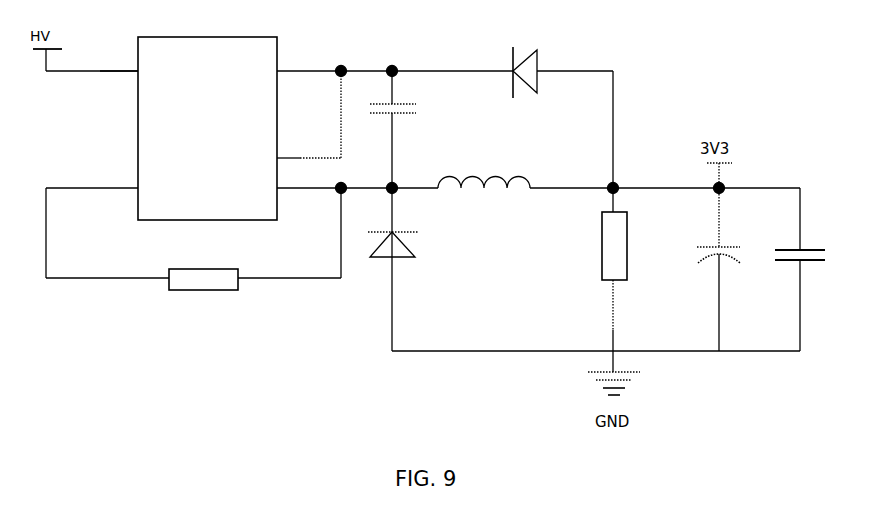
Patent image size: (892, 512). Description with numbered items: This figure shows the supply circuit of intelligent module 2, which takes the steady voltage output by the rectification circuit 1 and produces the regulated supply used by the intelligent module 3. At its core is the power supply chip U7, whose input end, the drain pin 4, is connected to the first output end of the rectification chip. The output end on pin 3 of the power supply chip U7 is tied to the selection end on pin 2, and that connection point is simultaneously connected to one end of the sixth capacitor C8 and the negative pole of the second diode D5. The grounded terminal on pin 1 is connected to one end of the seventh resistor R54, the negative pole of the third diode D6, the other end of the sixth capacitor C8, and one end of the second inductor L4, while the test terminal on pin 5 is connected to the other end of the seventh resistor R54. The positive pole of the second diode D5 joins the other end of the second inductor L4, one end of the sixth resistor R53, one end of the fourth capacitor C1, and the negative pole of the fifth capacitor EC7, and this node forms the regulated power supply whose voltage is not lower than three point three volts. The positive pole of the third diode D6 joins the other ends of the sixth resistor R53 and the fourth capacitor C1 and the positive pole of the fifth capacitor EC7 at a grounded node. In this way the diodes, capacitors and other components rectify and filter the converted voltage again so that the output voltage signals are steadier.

The power supply chip U7 is at (207, 114).
The seventh resistor R54 is at (203, 268).
The sixth resistor R53 is at (592, 280).
The sixth capacitor C8 is at (407, 129).
The second diode D5 is at (563, 112).
The third diode D6 is at (402, 269).
The second inductor L4 is at (484, 169).
The fifth capacitor EC7 is at (703, 269).
The fourth capacitor C1 is at (807, 269).
The rectification circuit 1 is at (309, 178).
The supply circuit of intelligent module 2 is at (309, 114).
The intelligent module 3 is at (309, 60).
The DRAIN pin 4 is at (119, 61).
The CS pin 5 is at (92, 176).